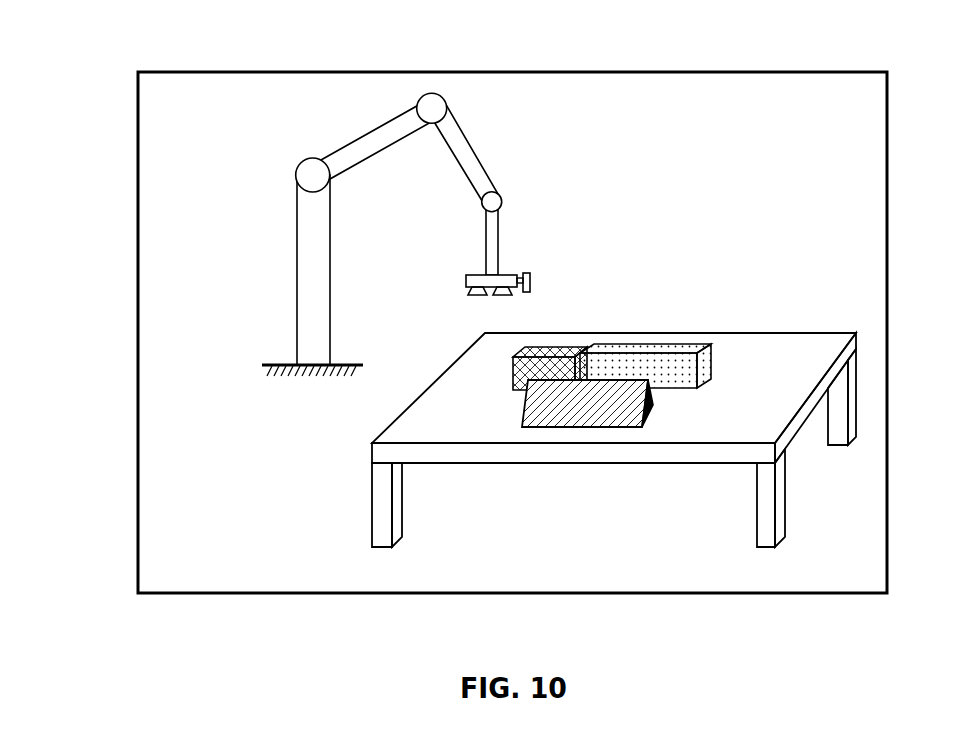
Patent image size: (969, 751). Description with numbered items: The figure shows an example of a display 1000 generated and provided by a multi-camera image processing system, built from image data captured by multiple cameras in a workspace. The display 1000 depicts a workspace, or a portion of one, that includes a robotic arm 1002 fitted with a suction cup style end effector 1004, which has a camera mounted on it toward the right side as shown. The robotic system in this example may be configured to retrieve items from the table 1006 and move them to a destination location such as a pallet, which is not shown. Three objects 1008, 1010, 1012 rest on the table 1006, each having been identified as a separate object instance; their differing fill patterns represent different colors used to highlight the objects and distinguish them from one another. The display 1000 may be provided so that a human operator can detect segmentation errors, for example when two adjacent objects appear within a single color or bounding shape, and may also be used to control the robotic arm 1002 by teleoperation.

The display 1000 is at (150, 50).
The robotic arm 1002 is at (297, 252).
The suction cup style end effector 1004 is at (508, 273).
The table 1006 is at (807, 345).
The object 1008 is at (557, 353).
The object 1010 is at (668, 352).
The object 1012 is at (653, 404).